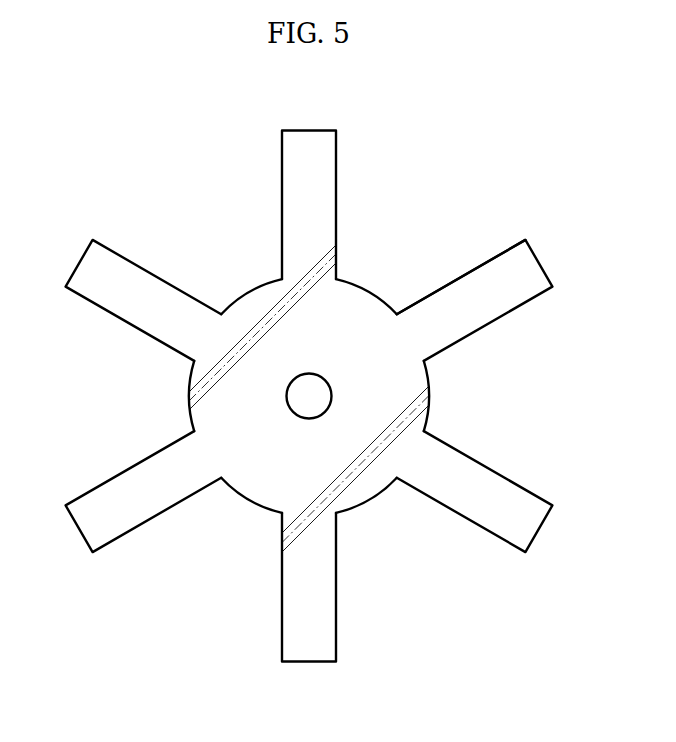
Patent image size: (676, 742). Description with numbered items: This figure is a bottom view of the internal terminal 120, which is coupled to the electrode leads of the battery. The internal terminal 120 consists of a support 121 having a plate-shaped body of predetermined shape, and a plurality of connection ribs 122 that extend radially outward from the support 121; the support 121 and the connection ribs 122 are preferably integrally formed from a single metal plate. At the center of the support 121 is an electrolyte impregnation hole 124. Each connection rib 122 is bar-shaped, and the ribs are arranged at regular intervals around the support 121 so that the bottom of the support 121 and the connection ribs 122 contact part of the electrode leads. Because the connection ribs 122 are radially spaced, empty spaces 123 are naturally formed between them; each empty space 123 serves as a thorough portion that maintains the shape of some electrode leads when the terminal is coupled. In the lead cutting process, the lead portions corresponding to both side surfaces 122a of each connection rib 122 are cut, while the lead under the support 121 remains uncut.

The internal terminal 120 is at (170, 123).
The support 121 is at (415, 378).
The connection rib 122 is at (448, 300).
The side surface of the connection rib 122a is at (484, 263).
The empty space 123 is at (391, 237).
The electrolyte impregnation hole 124 is at (287, 400).